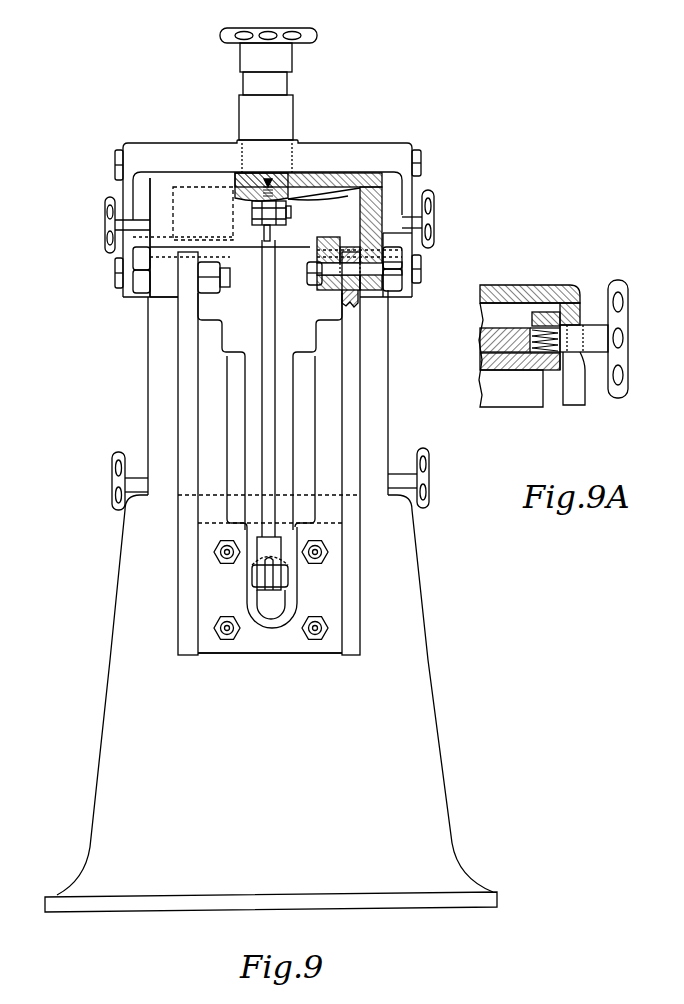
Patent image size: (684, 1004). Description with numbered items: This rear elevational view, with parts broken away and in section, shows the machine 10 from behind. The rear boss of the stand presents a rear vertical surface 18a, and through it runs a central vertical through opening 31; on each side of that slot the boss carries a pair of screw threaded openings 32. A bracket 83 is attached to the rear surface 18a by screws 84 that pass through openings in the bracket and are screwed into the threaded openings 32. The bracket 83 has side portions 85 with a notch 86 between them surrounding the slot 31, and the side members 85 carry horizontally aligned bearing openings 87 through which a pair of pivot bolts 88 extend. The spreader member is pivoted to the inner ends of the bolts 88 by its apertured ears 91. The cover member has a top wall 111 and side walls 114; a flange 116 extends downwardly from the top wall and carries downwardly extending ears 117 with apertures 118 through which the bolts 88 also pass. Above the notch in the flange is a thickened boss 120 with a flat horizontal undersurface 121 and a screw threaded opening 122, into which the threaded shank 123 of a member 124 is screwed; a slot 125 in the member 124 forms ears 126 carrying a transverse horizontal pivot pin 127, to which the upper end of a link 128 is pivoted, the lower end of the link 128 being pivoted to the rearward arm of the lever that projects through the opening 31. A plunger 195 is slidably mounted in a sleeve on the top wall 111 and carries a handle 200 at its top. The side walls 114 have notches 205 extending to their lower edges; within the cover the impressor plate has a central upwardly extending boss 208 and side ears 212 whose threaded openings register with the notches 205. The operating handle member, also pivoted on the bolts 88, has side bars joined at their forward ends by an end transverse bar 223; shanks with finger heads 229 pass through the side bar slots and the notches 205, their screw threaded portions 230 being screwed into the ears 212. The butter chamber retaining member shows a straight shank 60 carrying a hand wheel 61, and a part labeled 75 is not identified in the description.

In FIG. 9, the machine 10 is at (440, 600).
In FIG. 9, the rear vertical surface 18a is at (292, 622).
In FIG. 9, the central vertical through opening 31 is at (276, 607).
In FIG. 9, the screw threaded openings 32 is at (330, 555).
In FIG. 9, the straight shank 60 is at (140, 473).
In FIG. 9, the hand wheel 61 is at (110, 466).
In FIG. 9, the base plate 75 is at (153, 911).
In FIG. 9, the bracket 83 is at (374, 390).
In FIG. 9, the screws 84 is at (320, 640).
In FIG. 9, the side portions 85 is at (178, 379).
In FIG. 9, the notch 86 is at (252, 625).
In FIG. 9, the bearing openings 87 is at (352, 293).
In FIG. 9, the pivot bolts 88 is at (381, 274).
In FIG. 9, the apertured ears 91 is at (318, 290).
In FIG. 9A, the top wall 111 is at (509, 290).
In FIG. 9A, the side walls 114 is at (576, 288).
In FIG. 9, the flange 116 is at (203, 213).
In FIG. 9, the ears 117 is at (167, 292).
In FIG. 9, the apertures 118 is at (373, 267).
In FIG. 9, the thickened boss 120 is at (299, 186).
In FIG. 9, the flat horizontal undersurface 121 is at (322, 186).
In FIG. 9, the screw threaded opening 122 is at (258, 177).
In FIG. 9, the threaded shank 123 is at (272, 180).
In FIG. 9, the member 124 is at (253, 210).
In FIG. 9, the slot 125 is at (291, 214).
In FIG. 9, the ears 126 is at (266, 238).
In FIG. 9, the pivot pin 127 is at (344, 186).
In FIG. 9, the link 128 is at (263, 331).
In FIG. 9, the plunger 195 is at (213, 53).
In FIG. 9, the handle 200 is at (320, 34).
In FIG. 9A, the notches 205 is at (578, 386).
In FIG. 9A, the boss 208 is at (593, 327).
In FIG. 9A, the ears 212 is at (548, 312).
In FIG. 9, the end transverse bar 223 is at (143, 152).
In FIG. 9, the finger head 229 is at (104, 221).
In FIG. 9A, the finger head 229 is at (622, 282).
In FIG. 9A, the screw threaded portions 230 is at (545, 348).